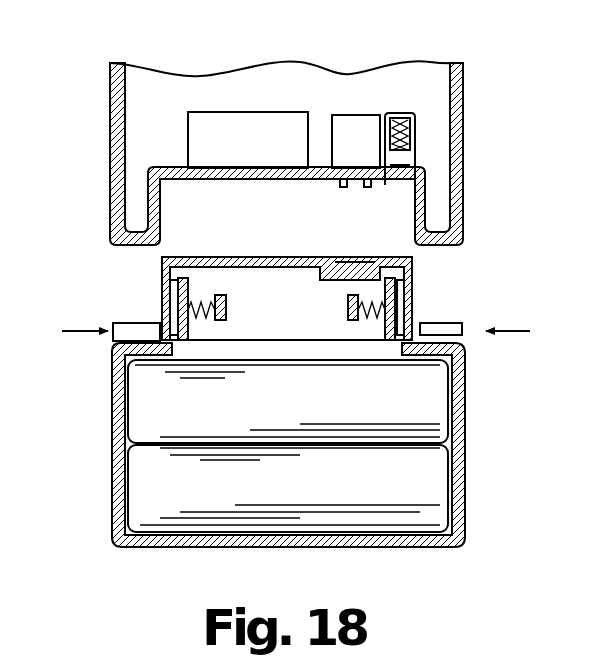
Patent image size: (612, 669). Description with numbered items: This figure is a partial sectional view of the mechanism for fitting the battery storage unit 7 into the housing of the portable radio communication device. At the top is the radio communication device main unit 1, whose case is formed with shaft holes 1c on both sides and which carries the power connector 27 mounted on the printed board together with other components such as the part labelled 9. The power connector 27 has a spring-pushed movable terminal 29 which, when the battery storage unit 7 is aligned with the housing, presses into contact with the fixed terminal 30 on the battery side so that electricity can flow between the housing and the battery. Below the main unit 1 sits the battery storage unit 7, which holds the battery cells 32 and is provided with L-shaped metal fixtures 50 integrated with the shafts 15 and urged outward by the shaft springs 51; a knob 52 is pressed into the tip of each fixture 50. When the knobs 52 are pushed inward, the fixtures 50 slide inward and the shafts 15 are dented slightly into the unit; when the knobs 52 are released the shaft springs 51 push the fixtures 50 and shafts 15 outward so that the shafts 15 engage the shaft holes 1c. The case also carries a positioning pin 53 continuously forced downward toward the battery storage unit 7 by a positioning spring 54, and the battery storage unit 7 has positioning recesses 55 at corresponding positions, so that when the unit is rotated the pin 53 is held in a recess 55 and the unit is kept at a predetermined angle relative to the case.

The radio communication device main unit 1 is at (466, 71).
The shaft holes 1c is at (110, 208).
The battery storage unit 7 is at (465, 500).
The circuit component 9 is at (243, 125).
The shafts 15 is at (410, 288).
The power connector 27 is at (355, 118).
The movable terminal 29 is at (337, 186).
The fixed terminal 30 is at (333, 281).
The battery cells 32 is at (433, 408).
The L-shaped metal fixtures 50 is at (215, 331).
The shaft springs 51 is at (203, 290).
The knob 52 is at (462, 338).
The positioning pin 53 is at (417, 163).
The positioning spring 54 is at (417, 123).
The positioning recesses 55 is at (410, 258).